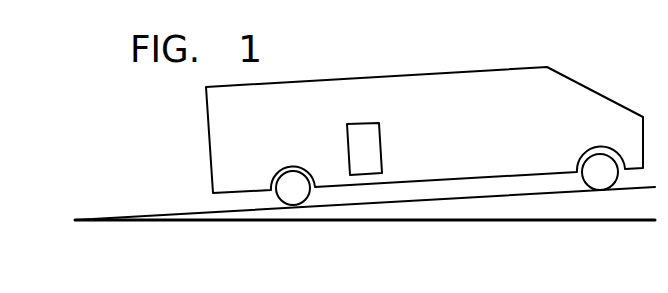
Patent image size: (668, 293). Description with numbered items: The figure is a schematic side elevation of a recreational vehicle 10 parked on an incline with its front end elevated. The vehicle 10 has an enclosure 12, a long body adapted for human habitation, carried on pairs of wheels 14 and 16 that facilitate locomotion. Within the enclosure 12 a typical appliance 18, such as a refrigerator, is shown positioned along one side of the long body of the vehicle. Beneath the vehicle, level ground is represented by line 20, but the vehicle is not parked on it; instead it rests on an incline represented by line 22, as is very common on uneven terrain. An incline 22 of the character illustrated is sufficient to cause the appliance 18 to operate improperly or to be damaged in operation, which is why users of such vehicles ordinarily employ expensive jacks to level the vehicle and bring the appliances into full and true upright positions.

The recreational vehicle 10 is at (428, 52).
The enclosure 12 is at (217, 132).
The wheels 14 is at (292, 177).
The wheels 16 is at (598, 160).
The appliance 18 is at (370, 153).
The level ground line 20 is at (424, 223).
The incline line 22 is at (500, 197).